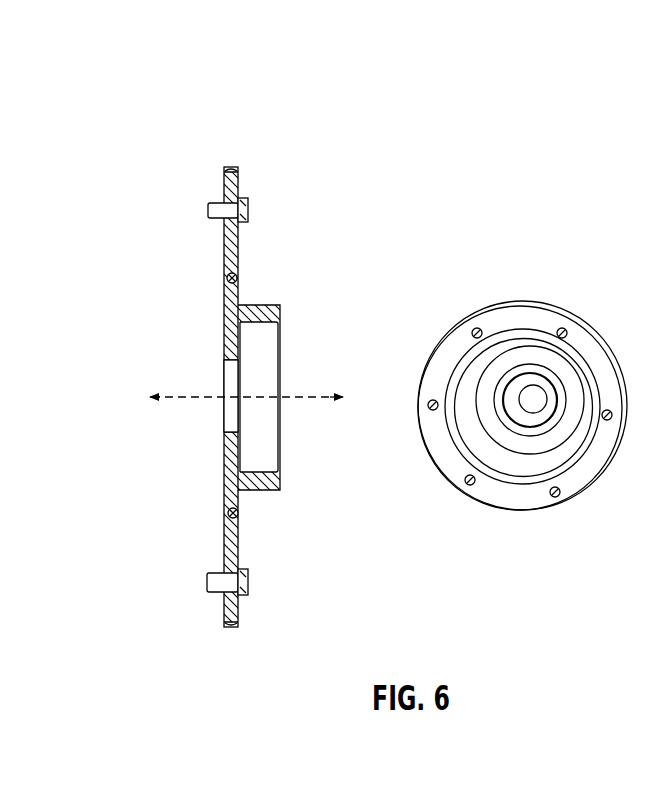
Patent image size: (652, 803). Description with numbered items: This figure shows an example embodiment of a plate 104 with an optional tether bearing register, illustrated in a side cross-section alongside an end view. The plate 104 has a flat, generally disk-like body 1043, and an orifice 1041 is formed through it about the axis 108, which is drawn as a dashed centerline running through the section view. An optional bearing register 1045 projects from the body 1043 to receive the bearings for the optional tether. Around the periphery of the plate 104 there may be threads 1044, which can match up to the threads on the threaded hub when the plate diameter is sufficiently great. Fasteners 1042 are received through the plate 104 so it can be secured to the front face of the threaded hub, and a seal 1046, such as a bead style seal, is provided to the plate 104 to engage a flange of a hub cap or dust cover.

The plate 104 is at (138, 88).
The orifice 1041 is at (221, 372).
The fasteners 1042 is at (248, 210).
The body 1043 is at (223, 250).
The threads 1044 is at (233, 167).
The bearing register 1045 is at (260, 348).
The seal 1046 is at (240, 278).
The axis 108 is at (172, 396).